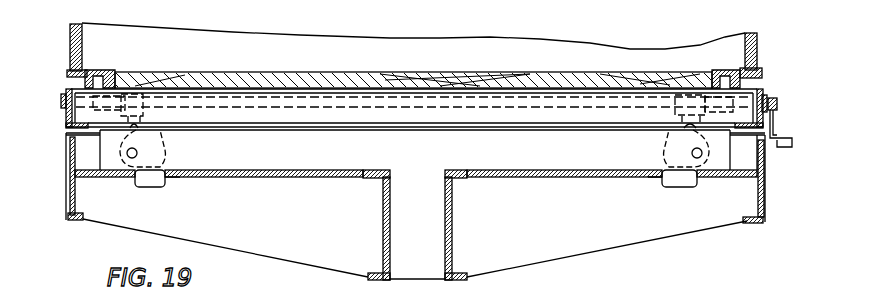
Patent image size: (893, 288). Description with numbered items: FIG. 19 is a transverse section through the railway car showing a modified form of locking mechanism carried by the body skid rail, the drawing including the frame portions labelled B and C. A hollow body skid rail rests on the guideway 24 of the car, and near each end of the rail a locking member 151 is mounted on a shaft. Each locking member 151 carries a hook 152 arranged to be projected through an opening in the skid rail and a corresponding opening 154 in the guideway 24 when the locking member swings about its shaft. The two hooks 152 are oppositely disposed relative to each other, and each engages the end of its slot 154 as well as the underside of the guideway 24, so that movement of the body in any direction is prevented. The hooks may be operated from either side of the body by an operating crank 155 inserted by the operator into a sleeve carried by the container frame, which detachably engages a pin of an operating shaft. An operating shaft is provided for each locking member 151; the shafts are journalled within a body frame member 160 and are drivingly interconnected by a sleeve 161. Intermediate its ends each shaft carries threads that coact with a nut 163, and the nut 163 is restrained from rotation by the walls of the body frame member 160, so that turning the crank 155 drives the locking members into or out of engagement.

The frame side member B is at (70, 46).
The frame end cap C is at (62, 157).
The guideway 24 is at (247, 177).
The locking member 151 is at (157, 180).
The hook 152 is at (133, 178).
The opening 154 is at (173, 178).
The operating crank 155 is at (783, 148).
The body frame member 160 is at (549, 96).
The sleeve 161 is at (535, 108).
The nut 163 is at (134, 92).